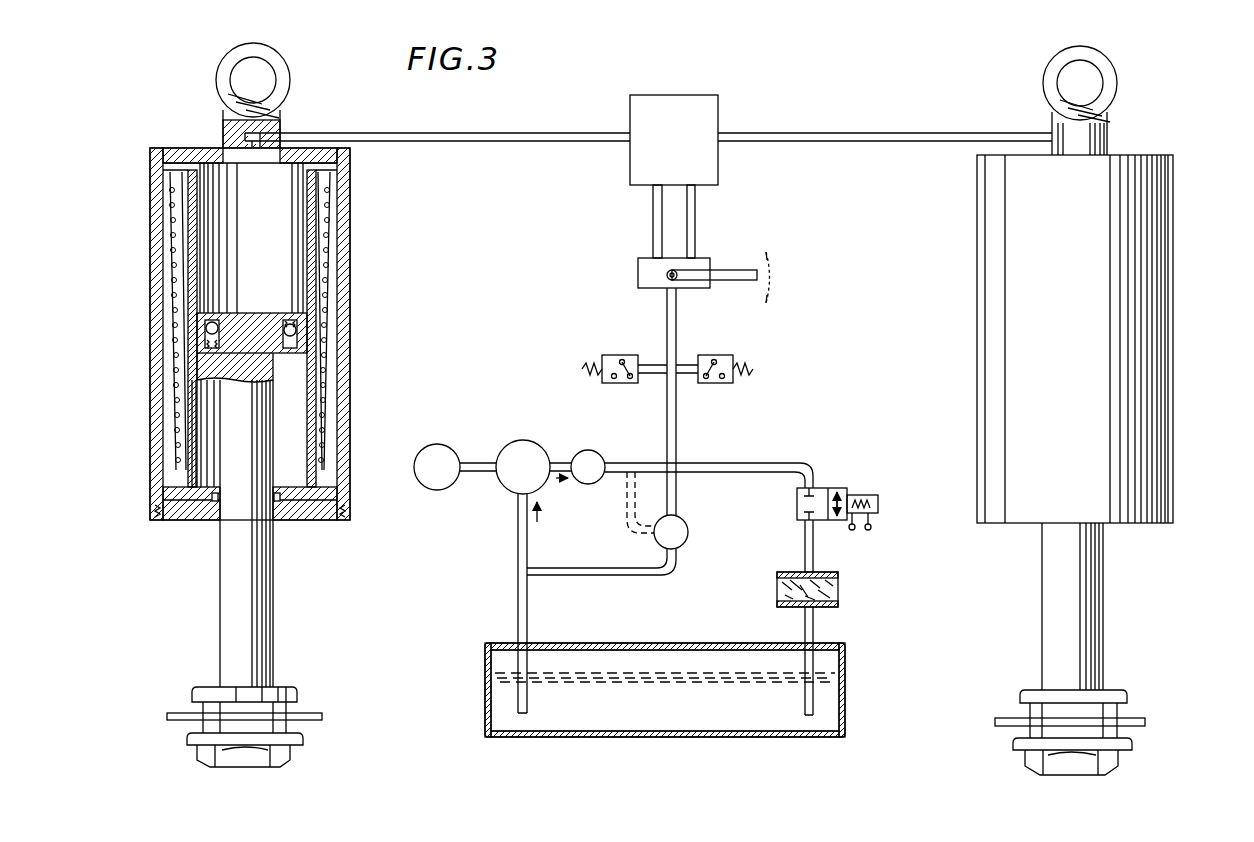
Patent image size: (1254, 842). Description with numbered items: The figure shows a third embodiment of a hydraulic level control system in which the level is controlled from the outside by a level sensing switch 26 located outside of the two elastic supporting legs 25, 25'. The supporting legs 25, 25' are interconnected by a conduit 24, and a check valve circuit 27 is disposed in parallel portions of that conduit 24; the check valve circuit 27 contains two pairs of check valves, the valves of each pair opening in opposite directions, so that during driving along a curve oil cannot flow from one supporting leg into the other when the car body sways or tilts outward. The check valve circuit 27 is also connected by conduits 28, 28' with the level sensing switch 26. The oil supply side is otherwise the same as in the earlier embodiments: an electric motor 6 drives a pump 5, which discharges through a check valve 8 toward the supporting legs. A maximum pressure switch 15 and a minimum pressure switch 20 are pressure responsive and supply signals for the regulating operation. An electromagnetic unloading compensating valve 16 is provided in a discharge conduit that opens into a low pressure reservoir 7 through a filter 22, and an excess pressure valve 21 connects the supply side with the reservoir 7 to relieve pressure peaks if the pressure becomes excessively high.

The pump 5 is at (524, 441).
The electric motor 6 is at (442, 446).
The low pressure reservoir 7 is at (484, 688).
The check valve 8 is at (600, 459).
The maximum pressure switch 15 is at (611, 355).
The electromagnetic unloading compensating valve 16 is at (818, 488).
The minimum pressure switch 20 is at (727, 355).
The excess pressure valve 21 is at (688, 533).
The filter 22 is at (839, 593).
The conduit 24 is at (524, 140).
The elastic supporting leg 25 is at (288, 405).
The elastic supporting leg 25' is at (1109, 410).
The level sensing switch 26 is at (638, 270).
The check valve circuit 27 is at (722, 118).
The conduit 28 is at (636, 221).
The conduit 28' is at (721, 221).